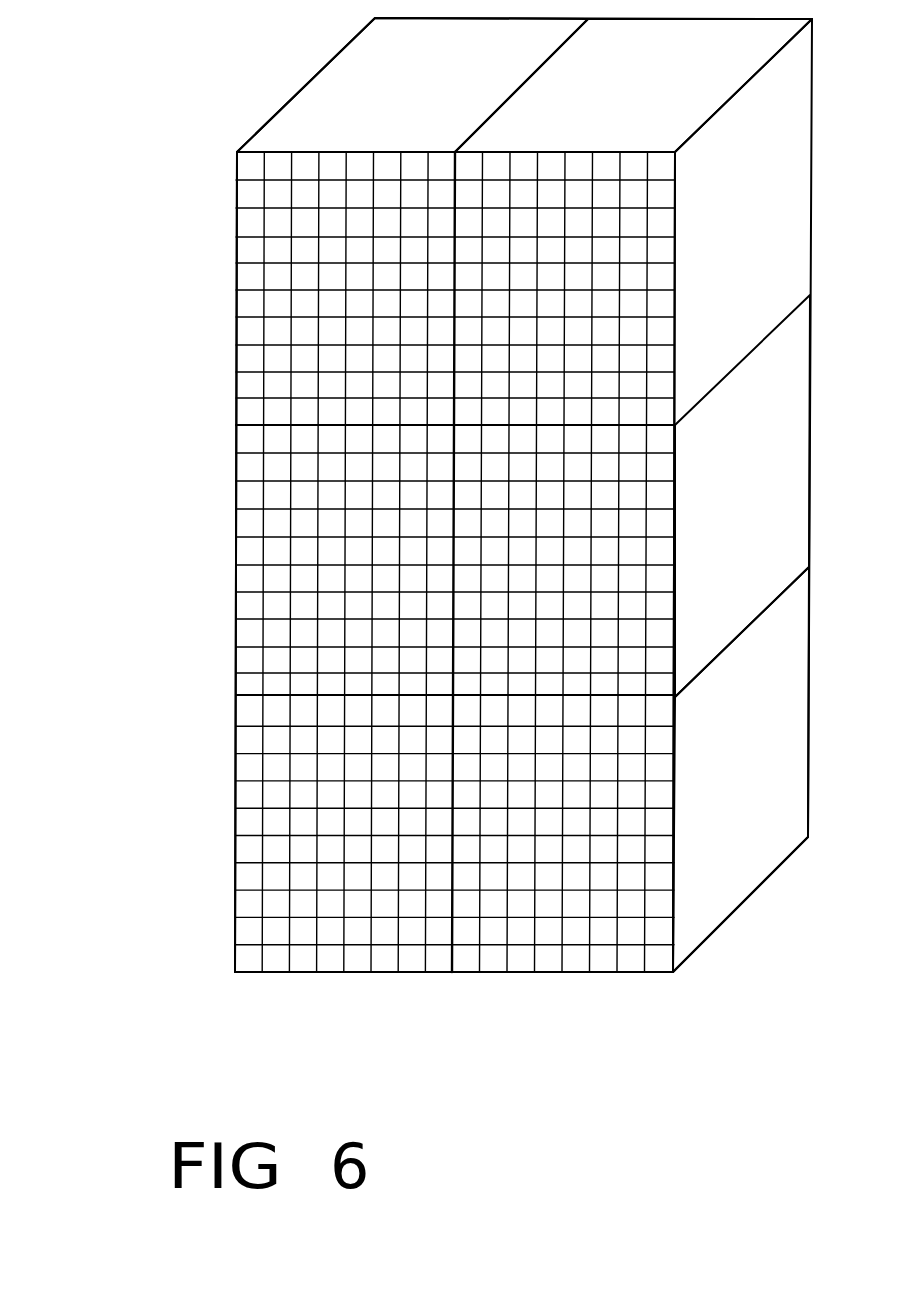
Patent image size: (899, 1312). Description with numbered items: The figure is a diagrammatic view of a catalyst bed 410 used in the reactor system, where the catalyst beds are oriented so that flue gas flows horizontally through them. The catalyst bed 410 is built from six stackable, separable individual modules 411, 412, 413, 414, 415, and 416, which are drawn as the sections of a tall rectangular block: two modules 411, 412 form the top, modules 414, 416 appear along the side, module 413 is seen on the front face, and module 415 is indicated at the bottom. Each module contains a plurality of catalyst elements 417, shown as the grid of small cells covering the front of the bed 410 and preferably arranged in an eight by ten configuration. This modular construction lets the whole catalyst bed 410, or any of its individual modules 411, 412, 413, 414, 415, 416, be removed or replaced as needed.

The catalyst bed 410 is at (195, 100).
The individual module 411 is at (430, 103).
The individual module 412 is at (633, 85).
The individual module 413 is at (205, 628).
The individual module 414 is at (777, 490).
The individual module 415 is at (320, 977).
The individual module 416 is at (782, 785).
The catalyst element 417 is at (232, 178).